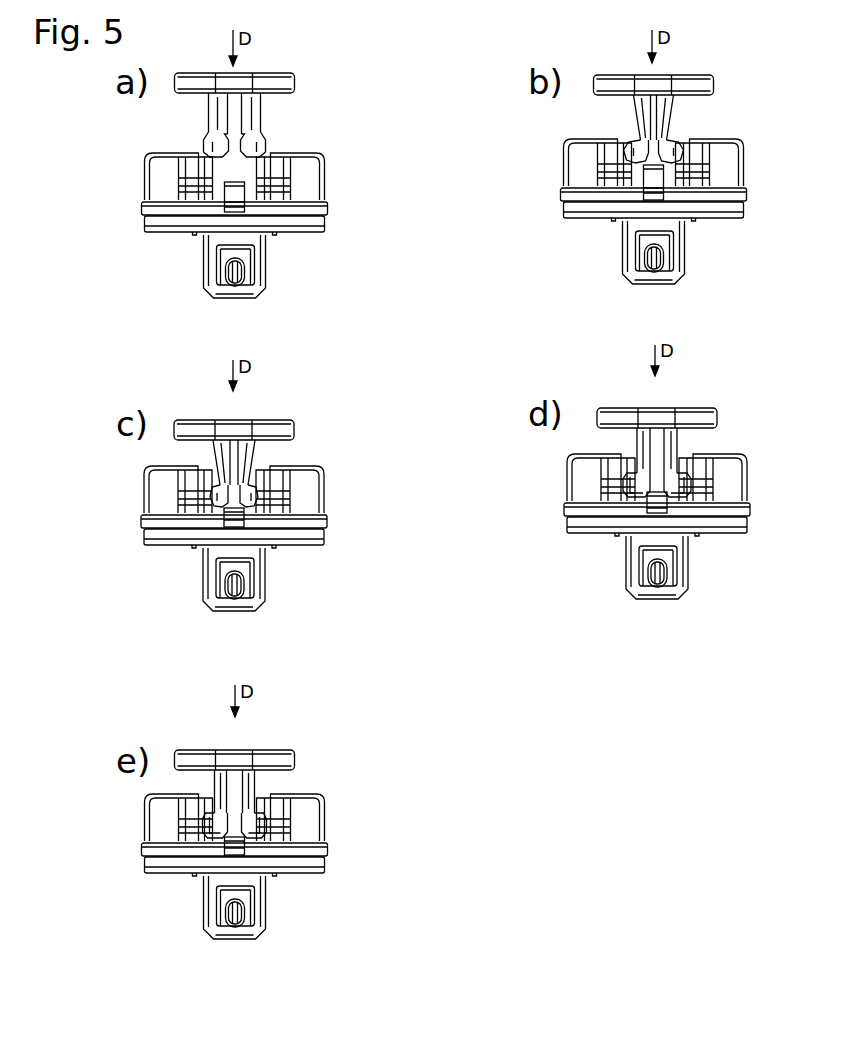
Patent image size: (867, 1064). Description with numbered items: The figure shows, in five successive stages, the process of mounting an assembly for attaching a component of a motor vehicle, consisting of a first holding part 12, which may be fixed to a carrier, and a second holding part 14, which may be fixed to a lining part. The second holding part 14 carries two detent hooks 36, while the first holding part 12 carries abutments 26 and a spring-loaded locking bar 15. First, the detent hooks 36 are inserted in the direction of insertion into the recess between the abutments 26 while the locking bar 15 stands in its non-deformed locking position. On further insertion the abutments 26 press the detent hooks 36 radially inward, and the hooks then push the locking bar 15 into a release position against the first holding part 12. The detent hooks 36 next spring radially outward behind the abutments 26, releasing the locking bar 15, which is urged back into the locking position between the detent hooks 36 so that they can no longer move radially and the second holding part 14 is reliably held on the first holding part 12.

In FIG. 5a, the first holding part 12 is at (315, 216).
In FIG. 5b, the first holding part 12 is at (733, 214).
In FIG. 5c, the first holding part 12 is at (315, 541).
In FIG. 5d, the first holding part 12 is at (733, 530).
In FIG. 5e, the first holding part 12 is at (315, 870).
In FIG. 5a, the second holding part 14 is at (279, 80).
In FIG. 5b, the second holding part 14 is at (700, 82).
In FIG. 5c, the second holding part 14 is at (279, 428).
In FIG. 5d, the second holding part 14 is at (703, 416).
In FIG. 5e, the second holding part 14 is at (279, 756).
In FIG. 5a, the locking bar 15 is at (233, 192).
In FIG. 5b, the locking bar 15 is at (652, 190).
In FIG. 5c, the locking bar 15 is at (232, 521).
In FIG. 5d, the locking bar 15 is at (656, 508).
In FIG. 5e, the locking bar 15 is at (233, 848).
In FIG. 5a, the abutments 26 is at (205, 166).
In FIG. 5b, the abutments 26 is at (625, 160).
In FIG. 5c, the abutments 26 is at (207, 490).
In FIG. 5d, the abutments 26 is at (627, 475).
In FIG. 5e, the abutments 26 is at (205, 815).
In FIG. 5a, the detent hooks 36 is at (213, 141).
In FIG. 5b, the detent hooks 36 is at (633, 147).
In FIG. 5c, the detent hooks 36 is at (220, 486).
In FIG. 5d, the detent hooks 36 is at (630, 490).
In FIG. 5e, the detent hooks 36 is at (207, 828).